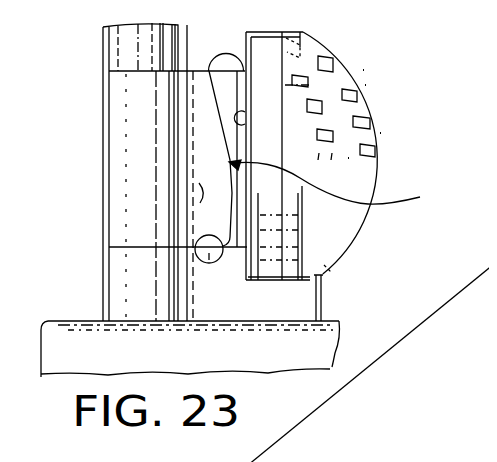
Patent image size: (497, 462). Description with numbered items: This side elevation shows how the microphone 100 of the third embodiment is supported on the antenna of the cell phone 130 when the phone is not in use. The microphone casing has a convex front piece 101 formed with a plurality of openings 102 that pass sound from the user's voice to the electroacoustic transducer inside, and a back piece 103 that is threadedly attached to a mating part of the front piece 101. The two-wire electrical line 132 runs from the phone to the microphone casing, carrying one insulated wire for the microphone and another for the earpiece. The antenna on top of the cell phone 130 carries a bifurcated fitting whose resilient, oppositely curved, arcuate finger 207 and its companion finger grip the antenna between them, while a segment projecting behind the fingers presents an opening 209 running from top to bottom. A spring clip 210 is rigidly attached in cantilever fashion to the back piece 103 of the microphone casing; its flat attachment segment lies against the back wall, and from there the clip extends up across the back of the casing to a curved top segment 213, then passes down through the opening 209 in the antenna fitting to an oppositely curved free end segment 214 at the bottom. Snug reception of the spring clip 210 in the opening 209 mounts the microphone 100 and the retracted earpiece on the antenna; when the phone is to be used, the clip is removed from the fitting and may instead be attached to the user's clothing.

The microphone 100 is at (336, 243).
The convex front piece 101 is at (359, 165).
The openings 102 is at (359, 114).
The back piece 103 is at (239, 117).
The cell phone 130 is at (319, 332).
The two-wire electrical line 132 is at (391, 332).
The arcuate finger 207 is at (115, 156).
The opening 209 is at (179, 205).
The spring clip 210 is at (342, 185).
The curved top segment 213 is at (210, 42).
The free end segment 214 is at (207, 257).